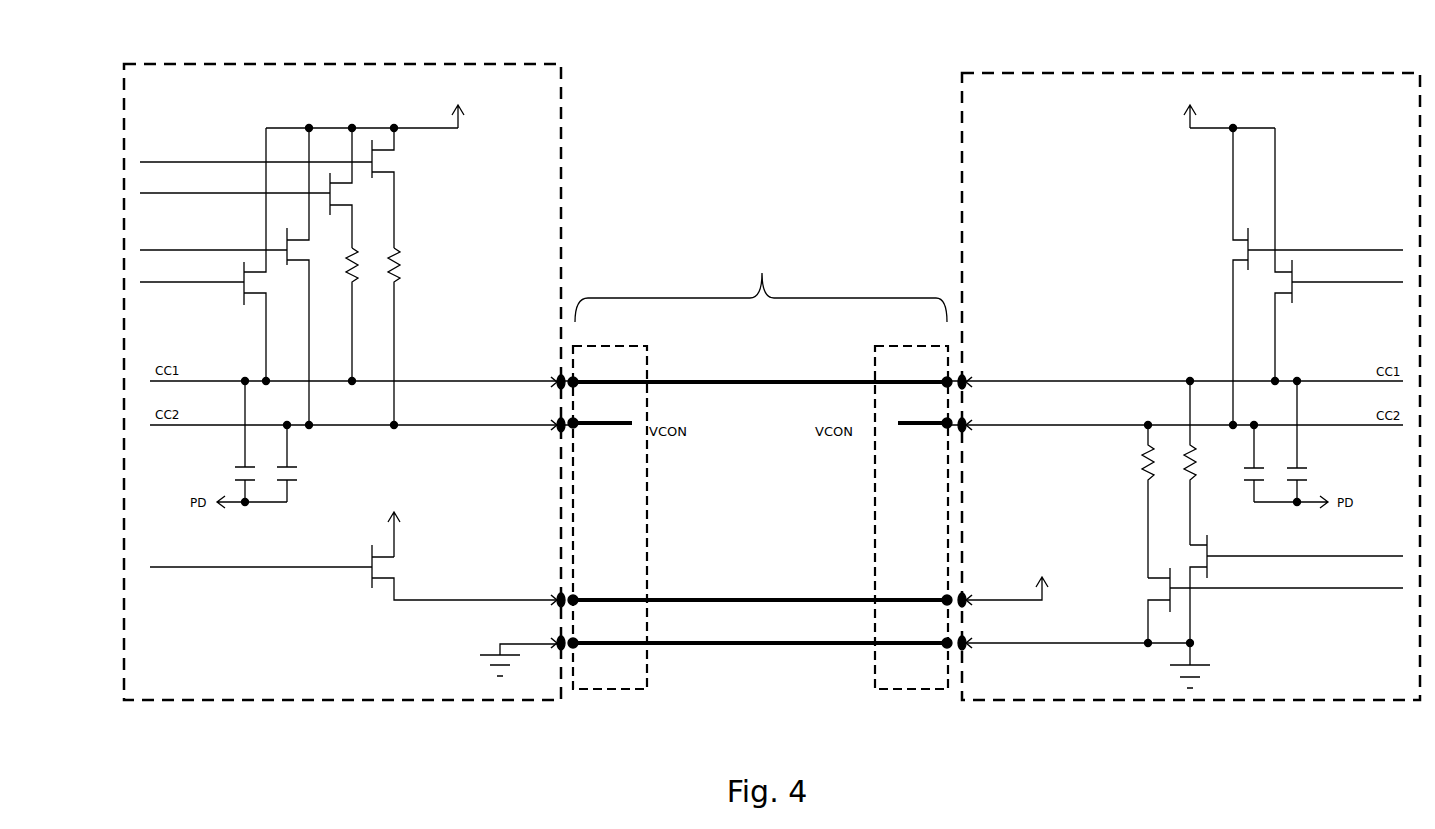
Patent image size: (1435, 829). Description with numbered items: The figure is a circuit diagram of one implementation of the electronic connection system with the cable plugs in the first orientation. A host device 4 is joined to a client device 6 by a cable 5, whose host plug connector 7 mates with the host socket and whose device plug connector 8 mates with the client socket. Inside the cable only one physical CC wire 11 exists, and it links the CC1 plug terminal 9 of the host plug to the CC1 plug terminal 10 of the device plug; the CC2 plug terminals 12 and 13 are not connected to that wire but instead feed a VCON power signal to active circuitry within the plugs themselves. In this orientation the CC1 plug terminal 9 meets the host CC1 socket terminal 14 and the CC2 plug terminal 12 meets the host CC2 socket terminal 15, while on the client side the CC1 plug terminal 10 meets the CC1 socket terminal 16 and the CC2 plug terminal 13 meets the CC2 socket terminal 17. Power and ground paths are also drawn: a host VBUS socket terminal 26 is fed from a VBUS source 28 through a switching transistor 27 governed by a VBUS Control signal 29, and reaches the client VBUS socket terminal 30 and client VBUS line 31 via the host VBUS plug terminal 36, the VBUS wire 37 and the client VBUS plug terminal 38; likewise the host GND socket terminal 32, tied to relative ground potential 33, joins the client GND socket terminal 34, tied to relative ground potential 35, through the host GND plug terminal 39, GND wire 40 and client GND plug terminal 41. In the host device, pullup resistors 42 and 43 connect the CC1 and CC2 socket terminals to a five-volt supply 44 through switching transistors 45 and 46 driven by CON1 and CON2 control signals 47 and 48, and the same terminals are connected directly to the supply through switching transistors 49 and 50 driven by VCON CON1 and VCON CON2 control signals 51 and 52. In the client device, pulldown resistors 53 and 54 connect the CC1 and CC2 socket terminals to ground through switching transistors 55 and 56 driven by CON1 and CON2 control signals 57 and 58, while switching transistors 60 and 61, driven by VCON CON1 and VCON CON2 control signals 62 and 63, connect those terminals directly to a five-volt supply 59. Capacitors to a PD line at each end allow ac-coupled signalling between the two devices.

The host device 4 is at (362, 62).
The cable 5 is at (761, 278).
The client device 6 is at (1100, 73).
The host plug connector 7 is at (612, 345).
The device plug connector 8 is at (912, 345).
The CC1 plug terminal 9 is at (582, 390).
The CC1 plug terminal 10 is at (940, 390).
The CC wire 11 is at (750, 380).
The CC2 plug terminal 12 is at (580, 427).
The CC2 plug terminal 13 is at (945, 430).
The CC1 socket terminal 14 is at (553, 382).
The CC2 socket terminal 15 is at (553, 438).
The CC1 socket terminal 16 is at (967, 392).
The CC2 socket terminal 17 is at (968, 428).
The host VBUS socket terminal 26 is at (553, 590).
The switching transistor 27 is at (377, 585).
The VBUS source 28 is at (398, 537).
The VBUS Control signal 29 is at (175, 565).
The client VBUS socket terminal 30 is at (968, 595).
The VBUS line 31 is at (1055, 585).
The host GND socket terminal 32 is at (552, 647).
The relative ground potential 33 is at (483, 680).
The client GND socket terminal 34 is at (967, 650).
The relative ground potential 35 is at (1175, 683).
The host VBUS plug terminal 36 is at (580, 598).
The VBUS wire 37 is at (713, 597).
The client VBUS plug terminal 38 is at (945, 598).
The host GND plug terminal 39 is at (577, 647).
The GND wire 40 is at (773, 642).
The client GND plug terminal 41 is at (947, 650).
The pullup resistor 42 is at (363, 273).
The pullup resistor 43 is at (405, 263).
The 5V supply 44 is at (468, 108).
The switching transistor 45 is at (342, 188).
The switching transistor 46 is at (403, 160).
The CON1 control signal 47 is at (197, 193).
The CON2 control signal 48 is at (185, 157).
The switching transistor 49 is at (252, 307).
The switching transistor 50 is at (293, 270).
The VCON CON1 control signal 51 is at (175, 287).
The VCON CON2 control signal 52 is at (248, 245).
The pulldown resistor 53 is at (1180, 465).
The pulldown resistor 54 is at (1137, 460).
The switching transistor 55 is at (1202, 563).
The switching transistor 56 is at (1142, 577).
The CON1 control signal 57 is at (1342, 552).
The CON2 control signal 58 is at (1350, 595).
The 5V supply 59 is at (1170, 107).
The switching transistor 60 is at (1273, 280).
The switching transistor 61 is at (1217, 250).
The VCON CON1 control signal 62 is at (1313, 287).
The VCON CON2 control signal 63 is at (1293, 247).